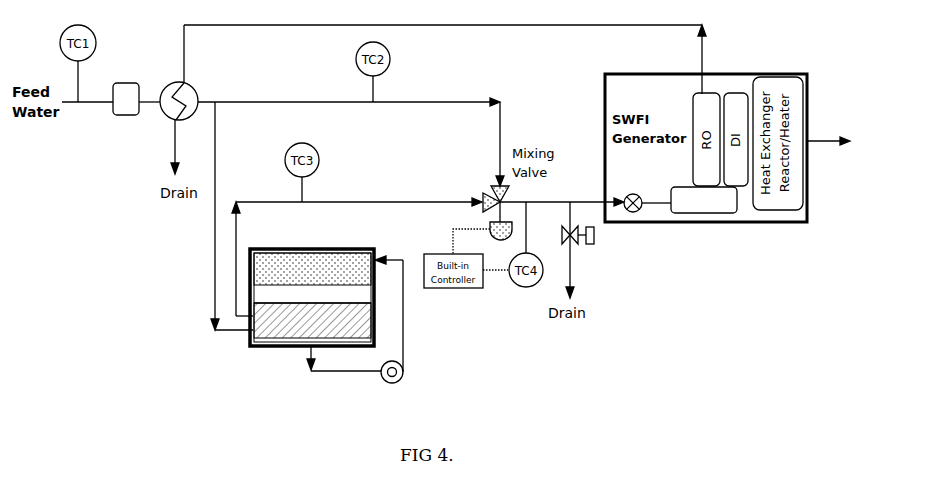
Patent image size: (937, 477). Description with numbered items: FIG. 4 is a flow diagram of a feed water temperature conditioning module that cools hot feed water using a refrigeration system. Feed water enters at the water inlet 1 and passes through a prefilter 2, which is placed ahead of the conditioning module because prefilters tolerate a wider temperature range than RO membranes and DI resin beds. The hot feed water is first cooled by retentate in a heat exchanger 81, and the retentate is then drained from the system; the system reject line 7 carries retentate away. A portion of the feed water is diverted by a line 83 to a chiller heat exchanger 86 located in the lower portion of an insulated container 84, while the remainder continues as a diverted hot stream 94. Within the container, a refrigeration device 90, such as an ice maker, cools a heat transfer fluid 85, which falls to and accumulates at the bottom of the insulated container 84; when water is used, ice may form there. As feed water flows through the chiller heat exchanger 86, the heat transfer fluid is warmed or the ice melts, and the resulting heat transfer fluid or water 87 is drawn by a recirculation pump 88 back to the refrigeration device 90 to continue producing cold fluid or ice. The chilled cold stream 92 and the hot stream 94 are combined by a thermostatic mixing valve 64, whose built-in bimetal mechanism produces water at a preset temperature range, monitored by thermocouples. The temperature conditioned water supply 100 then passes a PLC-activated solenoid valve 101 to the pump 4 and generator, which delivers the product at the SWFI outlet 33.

The water inlet 1 is at (90, 103).
The prefilter 2 is at (132, 83).
The heat exchanger 81 is at (162, 112).
The diverted hot stream 94 is at (410, 102).
The reject outlet line 7 is at (703, 62).
The bypass line to tank 83 is at (213, 218).
The cold stream 92 is at (338, 202).
The refrigeration device 90 is at (330, 260).
The insulated container 84 is at (249, 348).
The heat transfer fluid 85 is at (272, 328).
The chiller heat exchanger 86 is at (294, 330).
The heat transfer fluid or water 87 is at (358, 372).
The recirculation pump 88 is at (403, 376).
The thermostatic mixing valve 64 is at (497, 200).
The temperature conditioned water supply 100 is at (597, 205).
The solenoid valve 101 is at (636, 212).
The pump 4 is at (737, 206).
The SWFI outlet 33 is at (822, 145).